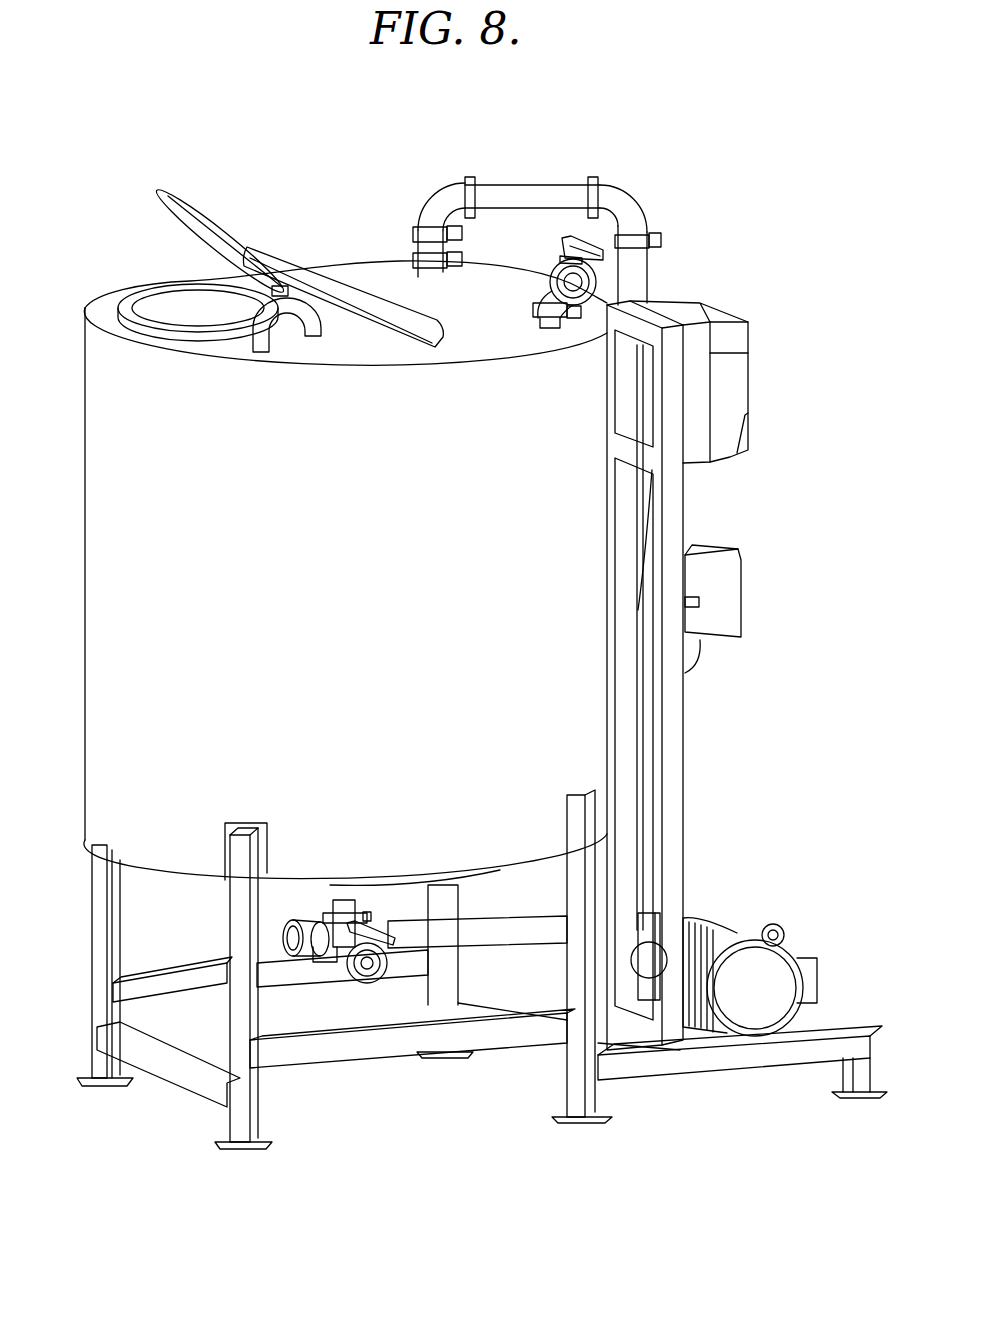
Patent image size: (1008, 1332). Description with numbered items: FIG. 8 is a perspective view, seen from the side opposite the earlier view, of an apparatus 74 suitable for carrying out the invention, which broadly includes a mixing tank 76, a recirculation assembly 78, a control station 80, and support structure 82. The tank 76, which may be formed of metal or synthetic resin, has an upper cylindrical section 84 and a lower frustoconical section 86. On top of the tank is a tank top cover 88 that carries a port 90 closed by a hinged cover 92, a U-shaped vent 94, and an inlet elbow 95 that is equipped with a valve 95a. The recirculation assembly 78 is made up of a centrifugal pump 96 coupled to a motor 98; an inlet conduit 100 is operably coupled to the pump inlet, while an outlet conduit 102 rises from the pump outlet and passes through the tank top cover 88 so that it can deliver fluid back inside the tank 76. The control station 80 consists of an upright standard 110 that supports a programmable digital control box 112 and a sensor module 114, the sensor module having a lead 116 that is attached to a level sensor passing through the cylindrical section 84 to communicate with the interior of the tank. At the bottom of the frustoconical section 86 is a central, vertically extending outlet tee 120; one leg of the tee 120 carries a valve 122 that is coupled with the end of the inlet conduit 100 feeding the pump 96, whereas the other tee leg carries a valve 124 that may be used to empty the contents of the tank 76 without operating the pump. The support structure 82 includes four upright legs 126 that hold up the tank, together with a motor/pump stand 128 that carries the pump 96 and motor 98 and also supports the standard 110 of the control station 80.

The apparatus 74 is at (718, 232).
The mixing tank 76 is at (373, 262).
The recirculation assembly 78 is at (802, 860).
The control station 80 is at (800, 318).
The support structure 82 is at (335, 1110).
The upper cylindrical section 84 is at (97, 505).
The lower frustoconical section 86 is at (387, 880).
The tank top cover 88 is at (323, 269).
The port 90 is at (147, 300).
The hinged cover 92 is at (175, 203).
The U-shaped vent 94 is at (305, 323).
The inlet elbow 95 is at (543, 296).
The valve 95a is at (560, 264).
The centrifugal pump 96 is at (638, 988).
The motor 98 is at (766, 968).
The inlet conduit 100 is at (492, 936).
The outlet conduit 102 is at (530, 190).
The upright standard 110 is at (670, 752).
The programmable digital control box 112 is at (735, 394).
The sensor module 114 is at (718, 591).
The lead 116 is at (696, 670).
The outlet tee 120 is at (330, 905).
The valve 122 is at (283, 937).
The valve 124 is at (372, 984).
The upright legs 126 is at (100, 930).
The motor/pump stand 128 is at (778, 1060).